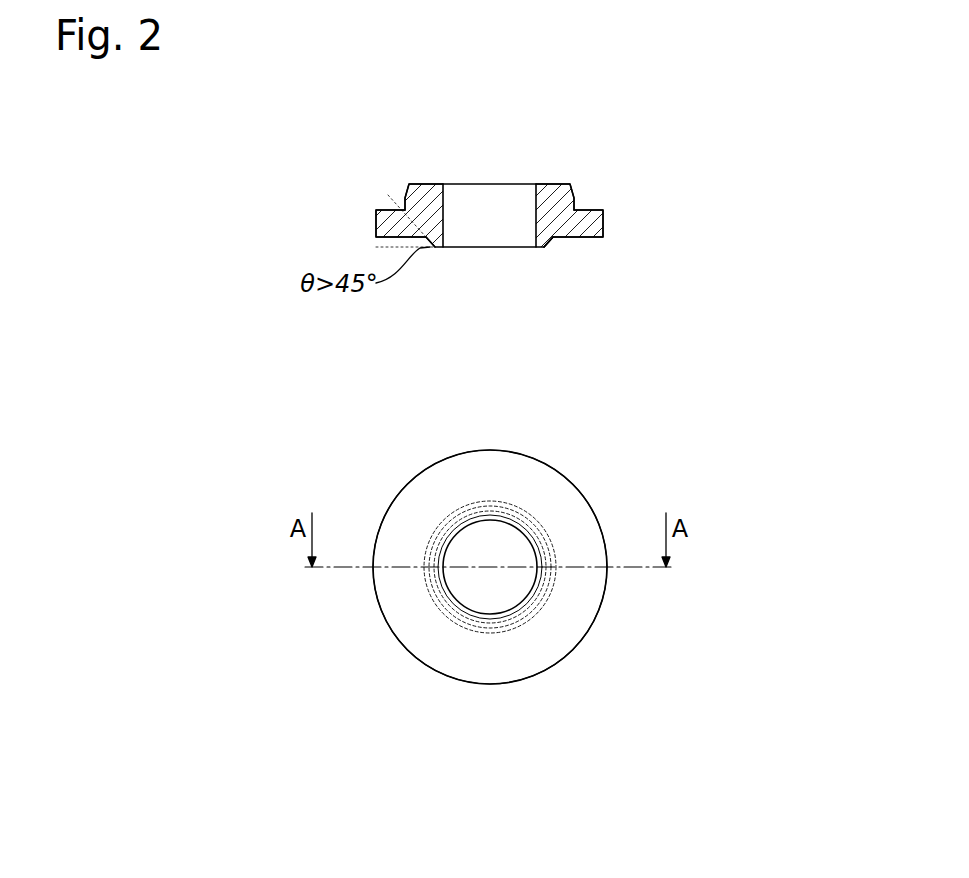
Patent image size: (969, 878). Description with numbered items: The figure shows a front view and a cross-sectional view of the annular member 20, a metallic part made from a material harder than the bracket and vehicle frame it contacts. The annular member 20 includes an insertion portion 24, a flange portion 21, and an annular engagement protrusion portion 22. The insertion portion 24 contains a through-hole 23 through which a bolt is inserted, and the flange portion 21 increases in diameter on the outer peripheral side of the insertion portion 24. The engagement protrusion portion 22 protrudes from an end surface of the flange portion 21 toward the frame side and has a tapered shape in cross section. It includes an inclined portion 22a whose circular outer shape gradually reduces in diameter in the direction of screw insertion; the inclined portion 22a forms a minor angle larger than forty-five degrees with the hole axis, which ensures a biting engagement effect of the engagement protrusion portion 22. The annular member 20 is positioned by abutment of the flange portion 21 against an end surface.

The annular member 20 is at (577, 179).
The flange portion 21 is at (607, 211).
The engagement protrusion portion 22 is at (545, 254).
The inclined portion 22a is at (552, 242).
The through-hole 23 is at (536, 224).
The insertion portion 24 is at (408, 188).